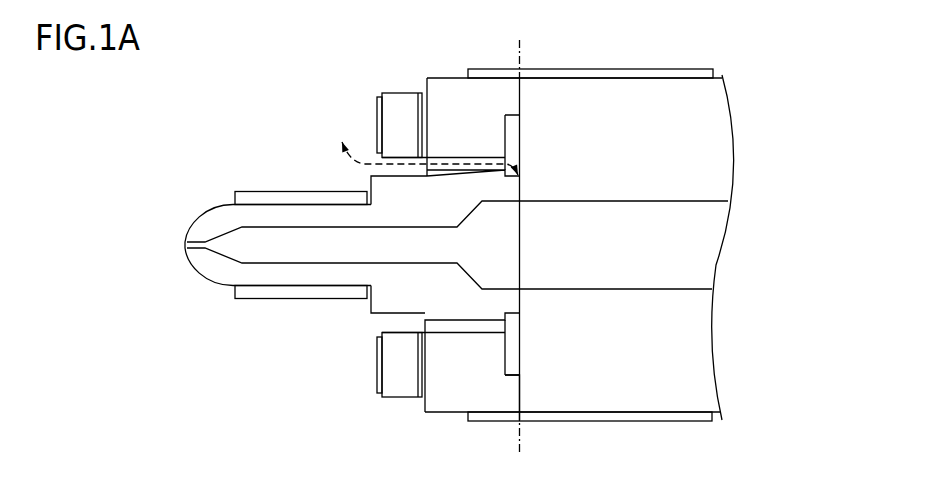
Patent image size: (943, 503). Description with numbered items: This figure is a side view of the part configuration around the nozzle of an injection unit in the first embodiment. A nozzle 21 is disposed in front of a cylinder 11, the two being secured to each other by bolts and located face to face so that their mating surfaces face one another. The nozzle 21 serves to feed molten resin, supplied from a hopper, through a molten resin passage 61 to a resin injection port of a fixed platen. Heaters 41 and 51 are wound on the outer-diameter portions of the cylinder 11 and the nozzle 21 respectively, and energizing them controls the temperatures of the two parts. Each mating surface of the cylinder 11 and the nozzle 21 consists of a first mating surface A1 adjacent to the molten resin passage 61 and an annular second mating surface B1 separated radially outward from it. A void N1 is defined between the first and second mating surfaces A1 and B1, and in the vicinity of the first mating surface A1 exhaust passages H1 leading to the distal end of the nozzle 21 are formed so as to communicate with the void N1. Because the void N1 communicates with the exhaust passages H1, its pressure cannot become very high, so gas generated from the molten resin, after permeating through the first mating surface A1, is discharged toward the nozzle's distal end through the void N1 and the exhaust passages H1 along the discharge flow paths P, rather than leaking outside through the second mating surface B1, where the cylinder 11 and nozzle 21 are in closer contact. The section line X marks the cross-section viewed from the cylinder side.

The cylinder 11 is at (657, 112).
The nozzle 21 is at (382, 305).
The heater 41 is at (579, 68).
The heater 51 is at (275, 300).
The molten resin passage 61 is at (693, 248).
The exhaust passage H1 is at (458, 157).
The void N1 is at (505, 367).
The first mating surface A1 is at (520, 302).
The second mating surface B1 is at (522, 392).
The discharge flow path P is at (424, 144).
The X-X cross-section line X is at (516, 42).